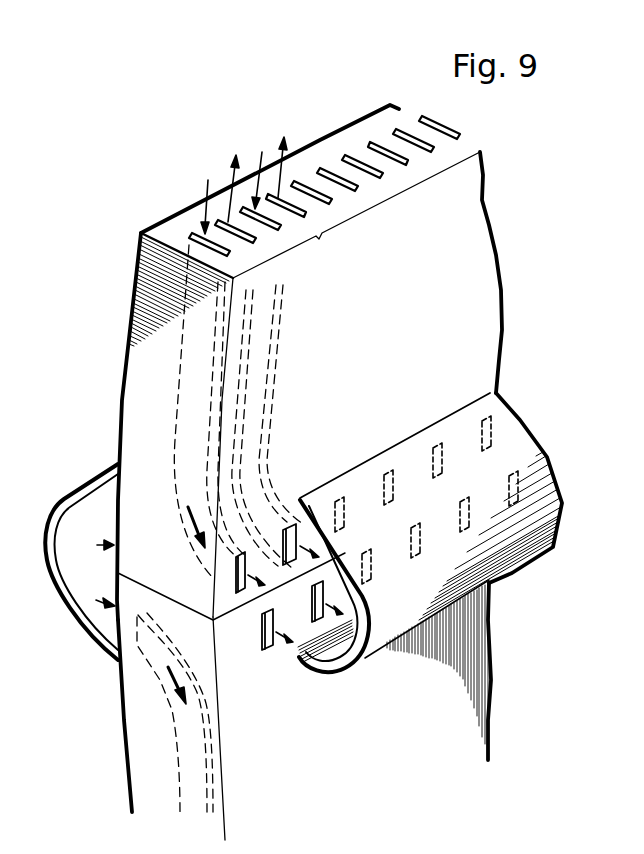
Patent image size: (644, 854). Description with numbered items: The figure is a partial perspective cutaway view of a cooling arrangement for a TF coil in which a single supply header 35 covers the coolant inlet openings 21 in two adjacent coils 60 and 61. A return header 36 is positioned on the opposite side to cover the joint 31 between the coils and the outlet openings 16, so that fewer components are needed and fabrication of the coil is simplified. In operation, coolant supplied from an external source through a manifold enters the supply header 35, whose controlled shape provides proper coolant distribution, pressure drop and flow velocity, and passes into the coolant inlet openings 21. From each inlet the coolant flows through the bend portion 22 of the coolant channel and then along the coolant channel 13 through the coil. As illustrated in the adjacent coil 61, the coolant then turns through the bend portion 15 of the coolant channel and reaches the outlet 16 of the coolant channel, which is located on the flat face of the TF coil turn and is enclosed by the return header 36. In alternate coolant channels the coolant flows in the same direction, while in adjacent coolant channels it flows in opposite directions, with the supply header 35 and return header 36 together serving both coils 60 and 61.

The coolant channel 13 is at (282, 234).
The bend portion of the coolant channel 15 is at (263, 488).
The outlet opening of the coolant channel 16 is at (243, 592).
The coolant inlet opening 21 is at (137, 650).
The bend portion of the coolant channel 22 is at (160, 680).
The joint 31 is at (165, 600).
The supply header 35 is at (82, 497).
The return header 36 is at (553, 547).
The coil 60 is at (153, 297).
The coil 61 is at (150, 790).